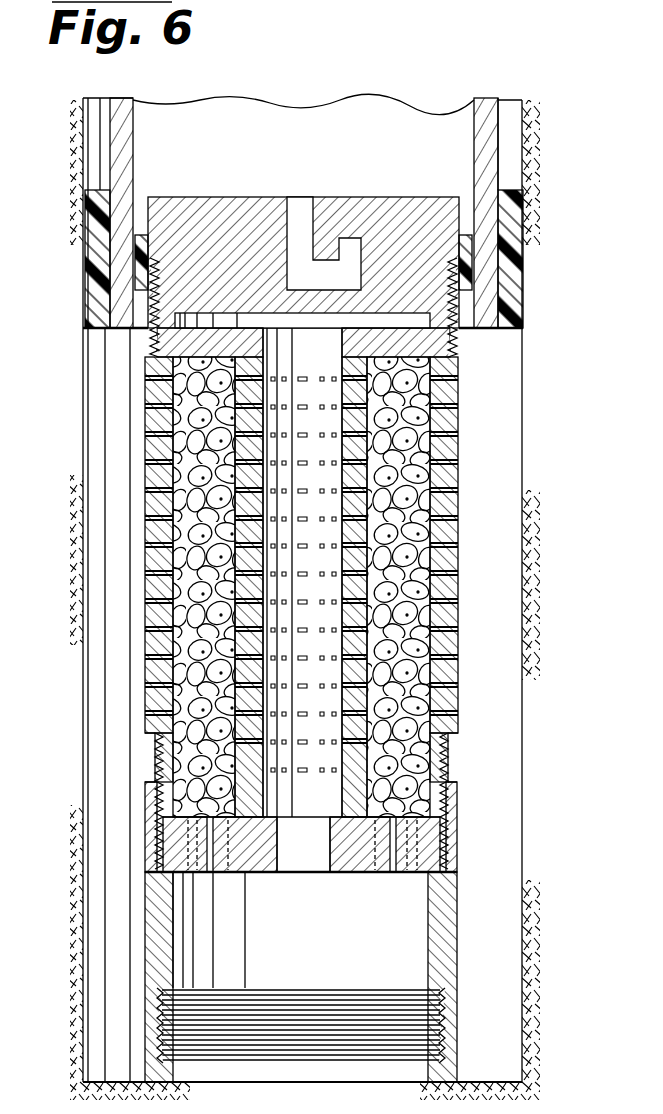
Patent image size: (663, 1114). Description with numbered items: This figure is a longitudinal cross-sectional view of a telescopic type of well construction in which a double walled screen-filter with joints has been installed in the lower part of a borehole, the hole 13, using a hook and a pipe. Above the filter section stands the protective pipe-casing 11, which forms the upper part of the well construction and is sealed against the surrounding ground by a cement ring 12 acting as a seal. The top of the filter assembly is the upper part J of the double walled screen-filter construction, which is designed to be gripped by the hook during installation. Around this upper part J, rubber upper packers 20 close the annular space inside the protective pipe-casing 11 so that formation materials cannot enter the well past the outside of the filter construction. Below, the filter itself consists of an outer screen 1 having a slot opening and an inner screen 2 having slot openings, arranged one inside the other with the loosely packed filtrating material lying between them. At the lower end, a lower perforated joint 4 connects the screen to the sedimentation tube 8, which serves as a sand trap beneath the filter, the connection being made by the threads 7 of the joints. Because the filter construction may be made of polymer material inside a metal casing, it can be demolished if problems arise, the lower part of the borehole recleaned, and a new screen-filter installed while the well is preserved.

The outer screen 1 is at (153, 452).
The inner screen 2 is at (200, 585).
The lower perforated joint 4 is at (429, 852).
The threads of joints 7 is at (447, 763).
The sedimentation tube 8 is at (441, 950).
The protective pipe-casing 11 is at (484, 170).
The cement ring 12 is at (511, 250).
The hole 13 is at (528, 107).
The upper packer 20 is at (459, 277).
The upper part of the double walled screen-filter construction J is at (190, 277).